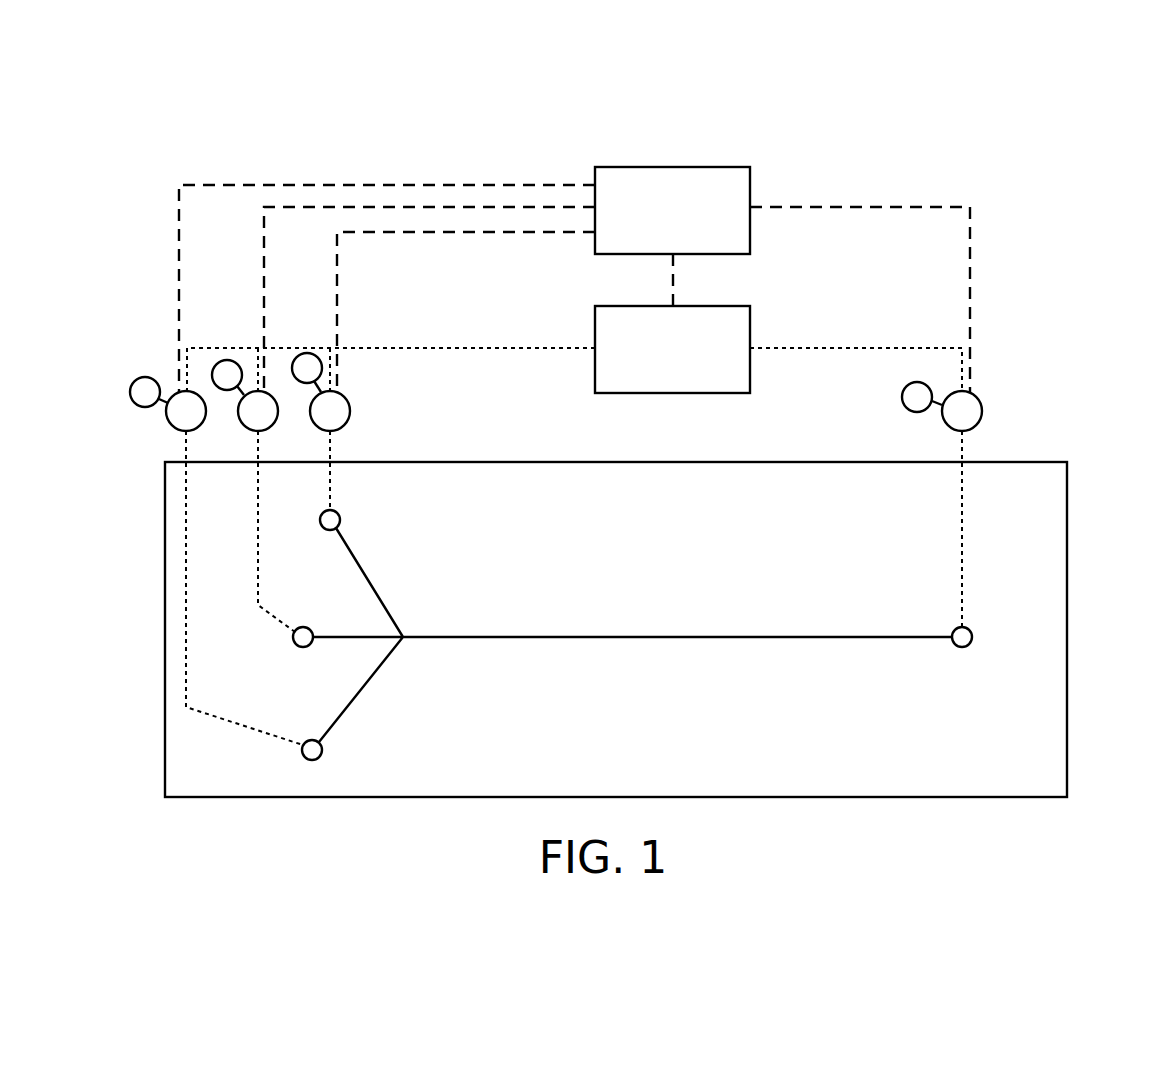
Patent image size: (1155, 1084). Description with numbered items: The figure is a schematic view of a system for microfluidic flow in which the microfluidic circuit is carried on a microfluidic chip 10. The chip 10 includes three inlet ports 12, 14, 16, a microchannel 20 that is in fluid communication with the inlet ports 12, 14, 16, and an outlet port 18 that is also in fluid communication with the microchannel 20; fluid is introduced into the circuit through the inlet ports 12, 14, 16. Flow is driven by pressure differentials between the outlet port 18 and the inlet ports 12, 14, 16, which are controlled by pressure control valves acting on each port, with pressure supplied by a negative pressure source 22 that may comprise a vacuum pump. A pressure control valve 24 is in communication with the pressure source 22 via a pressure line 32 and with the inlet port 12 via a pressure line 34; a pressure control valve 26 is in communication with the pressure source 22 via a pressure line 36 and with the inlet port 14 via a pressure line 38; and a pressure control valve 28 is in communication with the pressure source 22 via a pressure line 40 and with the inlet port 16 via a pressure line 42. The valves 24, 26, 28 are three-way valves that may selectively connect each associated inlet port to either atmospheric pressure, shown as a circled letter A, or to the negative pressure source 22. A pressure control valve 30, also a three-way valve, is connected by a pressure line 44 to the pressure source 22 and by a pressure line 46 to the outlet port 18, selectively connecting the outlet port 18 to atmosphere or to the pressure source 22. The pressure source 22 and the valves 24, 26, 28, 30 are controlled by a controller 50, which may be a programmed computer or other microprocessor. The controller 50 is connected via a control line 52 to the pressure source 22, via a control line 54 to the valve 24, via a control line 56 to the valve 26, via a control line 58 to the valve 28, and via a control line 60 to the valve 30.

The microfluidic chip 10 is at (1067, 521).
The inlet port 12 is at (340, 522).
The inlet port 14 is at (305, 627).
The inlet port 16 is at (322, 750).
The outlet port 18 is at (972, 635).
The microchannel 20 is at (607, 636).
The negative pressure source 22 is at (751, 325).
The pressure control valve 24 is at (350, 413).
The pressure control valve 26 is at (270, 427).
The pressure control valve 28 is at (175, 428).
The pressure control valve 30 is at (982, 410).
The pressure line 32 is at (336, 371).
The pressure line 34 is at (334, 476).
The pressure line 36 is at (256, 348).
The pressure line 38 is at (257, 478).
The pressure line 40 is at (182, 360).
The pressure line 42 is at (187, 681).
The pressure line 44 is at (897, 348).
The pressure line 46 is at (960, 540).
The controller 50 is at (751, 184).
The control line 52 is at (675, 260).
The control line 54 is at (563, 232).
The control line 56 is at (457, 207).
The control line 58 is at (400, 185).
The control line 60 is at (923, 207).